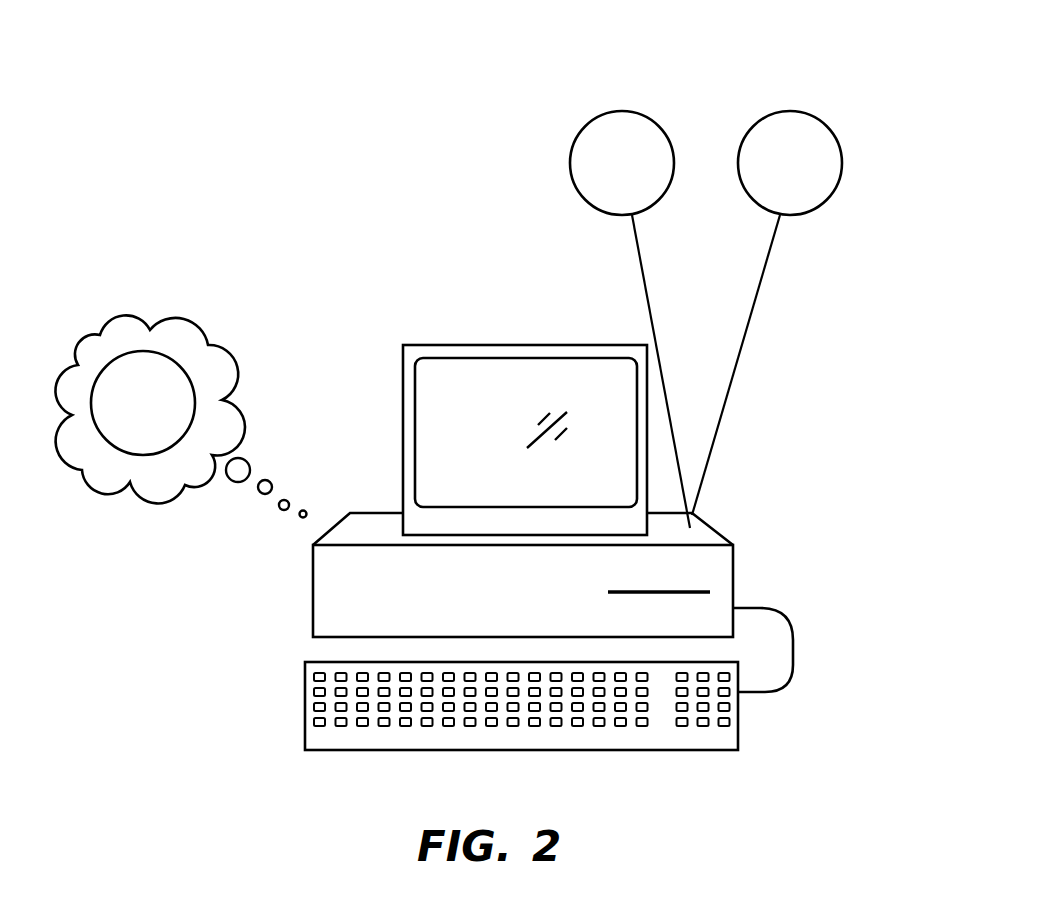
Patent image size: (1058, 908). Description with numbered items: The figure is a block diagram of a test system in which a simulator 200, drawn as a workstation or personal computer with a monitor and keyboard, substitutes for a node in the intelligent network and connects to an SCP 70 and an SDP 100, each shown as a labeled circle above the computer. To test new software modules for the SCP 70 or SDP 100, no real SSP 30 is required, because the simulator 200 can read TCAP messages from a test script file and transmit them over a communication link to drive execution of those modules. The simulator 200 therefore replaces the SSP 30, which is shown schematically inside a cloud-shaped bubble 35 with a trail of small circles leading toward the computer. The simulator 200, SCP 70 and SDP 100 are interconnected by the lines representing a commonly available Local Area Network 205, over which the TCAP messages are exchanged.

The SSP 30 is at (140, 352).
The bubble 35 is at (212, 340).
The SCP 70 is at (620, 110).
The SDP 100 is at (787, 110).
The simulator 200 is at (718, 534).
The Local Area Network (LAN) 205 is at (740, 357).